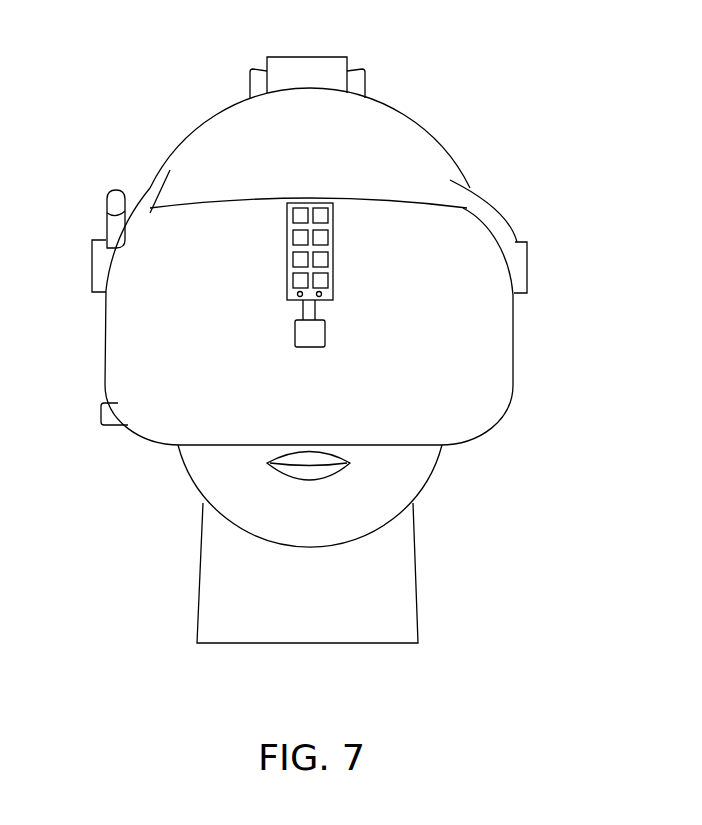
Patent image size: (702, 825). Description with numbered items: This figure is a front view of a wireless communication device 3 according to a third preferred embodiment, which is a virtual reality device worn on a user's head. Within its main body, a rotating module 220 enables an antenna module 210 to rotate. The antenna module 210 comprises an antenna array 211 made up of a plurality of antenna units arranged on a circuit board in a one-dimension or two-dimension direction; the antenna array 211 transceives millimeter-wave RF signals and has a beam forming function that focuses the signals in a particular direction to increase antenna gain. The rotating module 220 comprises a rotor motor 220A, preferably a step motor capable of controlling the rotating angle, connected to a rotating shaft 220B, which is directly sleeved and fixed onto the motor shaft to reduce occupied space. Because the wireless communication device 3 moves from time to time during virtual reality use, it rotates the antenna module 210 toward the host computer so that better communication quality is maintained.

The wireless communication device 3 is at (85, 27).
The antenna module 210 is at (441, 194).
The antenna array 211 is at (320, 217).
The rotating module 220 is at (308, 336).
The rotor motor 220A is at (293, 325).
The rotating shaft 220B is at (310, 313).